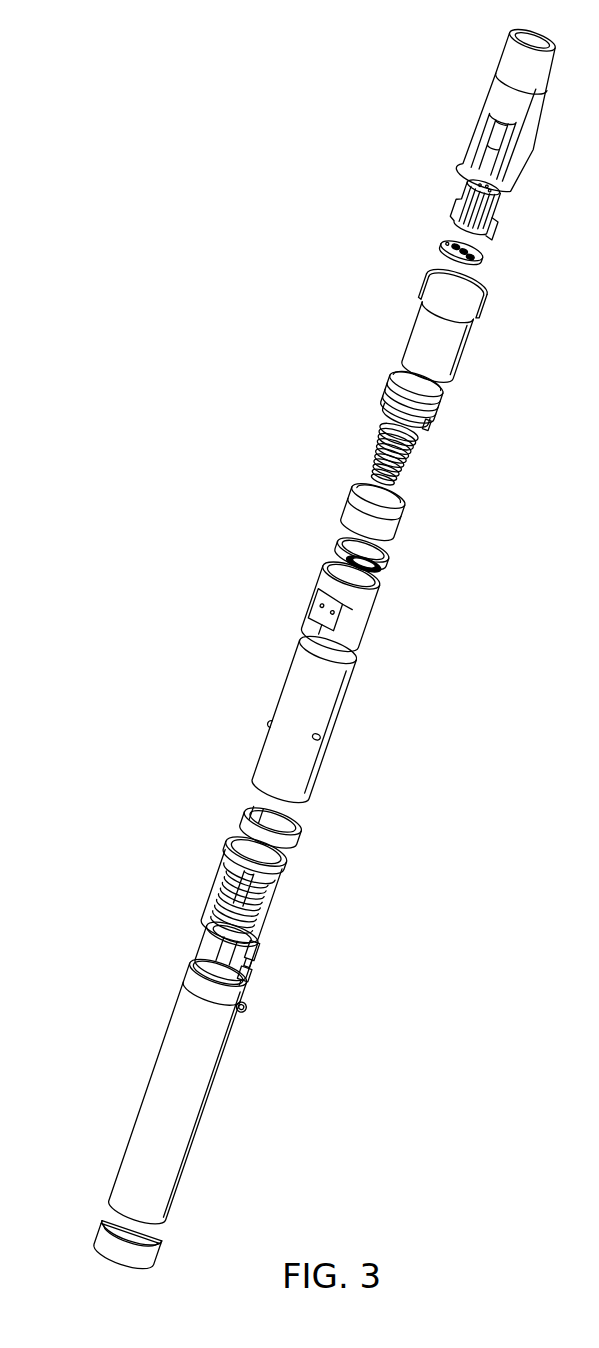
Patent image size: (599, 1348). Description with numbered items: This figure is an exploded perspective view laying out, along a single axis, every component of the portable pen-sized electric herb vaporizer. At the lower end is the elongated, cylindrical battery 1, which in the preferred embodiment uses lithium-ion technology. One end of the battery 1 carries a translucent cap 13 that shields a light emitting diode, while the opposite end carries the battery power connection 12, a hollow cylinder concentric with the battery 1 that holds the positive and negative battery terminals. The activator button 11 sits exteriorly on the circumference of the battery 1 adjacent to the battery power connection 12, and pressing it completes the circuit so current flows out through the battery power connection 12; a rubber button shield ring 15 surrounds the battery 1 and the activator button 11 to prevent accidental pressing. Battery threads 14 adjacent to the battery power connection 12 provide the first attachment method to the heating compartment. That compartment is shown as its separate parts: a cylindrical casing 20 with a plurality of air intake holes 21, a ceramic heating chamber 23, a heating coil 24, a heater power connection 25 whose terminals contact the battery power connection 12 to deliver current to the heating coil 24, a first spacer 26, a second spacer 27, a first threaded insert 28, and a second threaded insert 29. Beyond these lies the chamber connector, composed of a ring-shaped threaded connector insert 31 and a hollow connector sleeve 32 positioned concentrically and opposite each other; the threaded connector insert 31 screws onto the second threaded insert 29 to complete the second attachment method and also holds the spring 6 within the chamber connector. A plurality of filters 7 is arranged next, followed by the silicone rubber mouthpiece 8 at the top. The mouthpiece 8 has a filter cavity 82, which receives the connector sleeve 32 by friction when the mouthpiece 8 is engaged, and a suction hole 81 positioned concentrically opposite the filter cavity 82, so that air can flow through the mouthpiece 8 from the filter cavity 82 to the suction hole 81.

The battery 1 is at (182, 1053).
The activator button 11 is at (246, 1008).
The battery power connection 12 is at (204, 936).
The translucent cap 13 is at (102, 1212).
The battery threads 14 is at (250, 976).
The button shield ring 15 is at (264, 950).
The cylindrical casing 20 is at (293, 676).
The air intake holes 21 is at (274, 726).
The ceramic heating chamber 23 is at (324, 584).
The heating coil 24 is at (350, 553).
The heater power connection 25 is at (230, 892).
The first spacer 26 is at (248, 804).
The second spacer 27 is at (352, 492).
The first threaded insert 28 is at (236, 848).
The second threaded insert 29 is at (338, 532).
The threaded connector insert 31 is at (388, 394).
The connector sleeve 32 is at (424, 270).
The spring 6 is at (376, 444).
The filters 7 is at (468, 184).
The mouthpiece 8 is at (498, 80).
The suction hole 81 is at (524, 32).
The filter cavity 82 is at (492, 142).